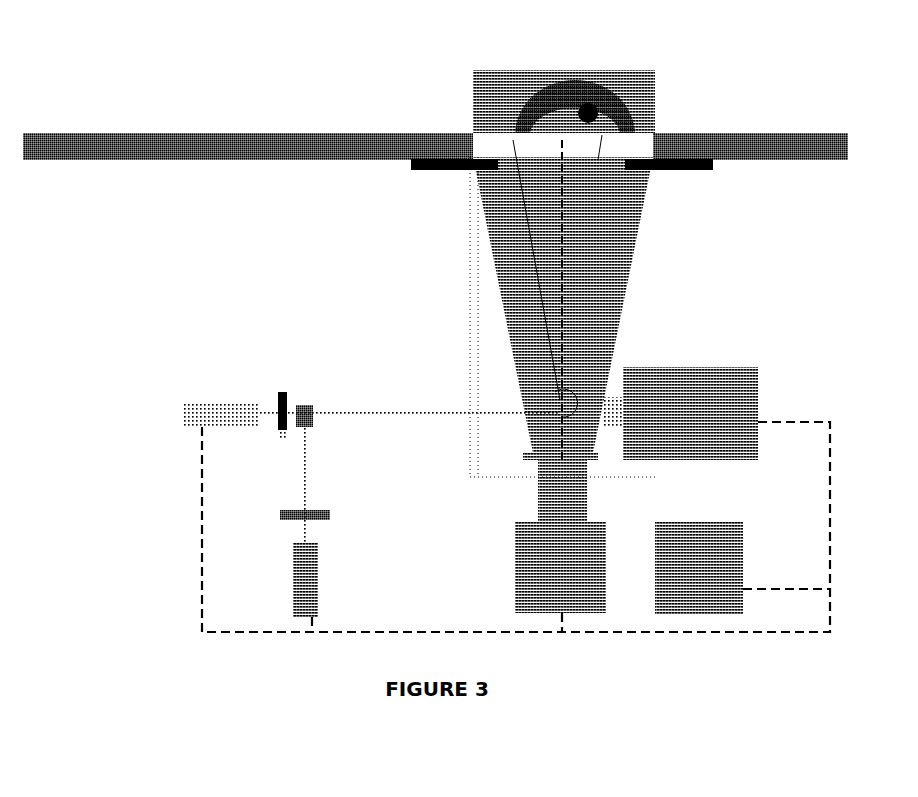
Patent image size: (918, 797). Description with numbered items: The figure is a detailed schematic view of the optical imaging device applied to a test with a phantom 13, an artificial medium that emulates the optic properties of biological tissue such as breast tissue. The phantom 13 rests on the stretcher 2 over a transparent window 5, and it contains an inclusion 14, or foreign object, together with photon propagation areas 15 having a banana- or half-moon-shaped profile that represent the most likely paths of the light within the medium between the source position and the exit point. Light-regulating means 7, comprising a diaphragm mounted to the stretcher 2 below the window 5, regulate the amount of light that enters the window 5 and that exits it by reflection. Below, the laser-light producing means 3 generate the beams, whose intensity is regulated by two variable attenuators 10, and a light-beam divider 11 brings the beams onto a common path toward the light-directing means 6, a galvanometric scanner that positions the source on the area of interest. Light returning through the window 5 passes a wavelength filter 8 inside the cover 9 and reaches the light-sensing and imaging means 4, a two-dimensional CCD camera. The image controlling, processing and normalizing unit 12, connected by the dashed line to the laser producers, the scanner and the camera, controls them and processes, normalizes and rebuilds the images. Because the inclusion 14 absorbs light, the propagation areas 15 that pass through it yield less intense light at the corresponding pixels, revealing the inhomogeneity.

The stretcher 2 is at (98, 133).
The laser-light producing means 3 is at (222, 407).
The light-sensing and imaging means 4 is at (548, 573).
The transparent window 5 is at (637, 143).
The light-directing means 6 is at (703, 393).
The light-regulating means 7 is at (440, 168).
The wavelength filter 8 is at (545, 456).
The cover 9 is at (478, 352).
The variable attenuators 10 is at (282, 395).
The light-beam divider 11 is at (307, 402).
The image controlling, processing and normalizing unit 12 is at (710, 565).
The phantom 13 is at (511, 85).
The inclusion 14 is at (590, 106).
The photon propagation areas 15 is at (595, 97).